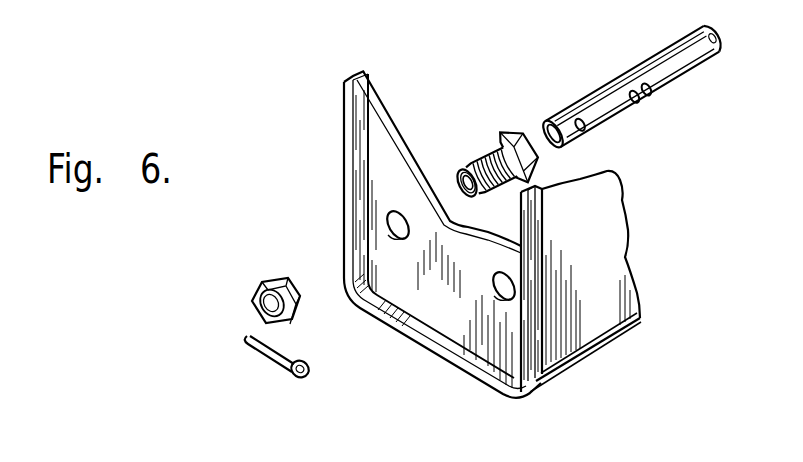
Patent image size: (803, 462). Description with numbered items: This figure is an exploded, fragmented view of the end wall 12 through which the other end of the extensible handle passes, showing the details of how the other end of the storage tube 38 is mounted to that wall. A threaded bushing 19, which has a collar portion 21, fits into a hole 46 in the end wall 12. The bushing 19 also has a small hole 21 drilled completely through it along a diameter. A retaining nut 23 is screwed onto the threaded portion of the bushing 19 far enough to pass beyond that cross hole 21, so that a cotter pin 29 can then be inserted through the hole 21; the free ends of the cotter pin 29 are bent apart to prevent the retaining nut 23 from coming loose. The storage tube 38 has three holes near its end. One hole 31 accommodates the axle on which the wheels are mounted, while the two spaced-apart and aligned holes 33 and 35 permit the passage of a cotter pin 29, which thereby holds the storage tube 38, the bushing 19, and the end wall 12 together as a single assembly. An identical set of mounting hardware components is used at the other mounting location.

The bracket 12 is at (412, 303).
The threaded bolt 19 is at (473, 165).
The bolt head 21 is at (484, 148).
The nut 23 is at (288, 280).
The cotter pin 29 is at (277, 362).
The tube hole 31 is at (590, 127).
The tube hole 33 is at (638, 100).
The tube hole 35 is at (653, 97).
The tube 38 is at (637, 68).
The mounting holes 46 is at (388, 223).